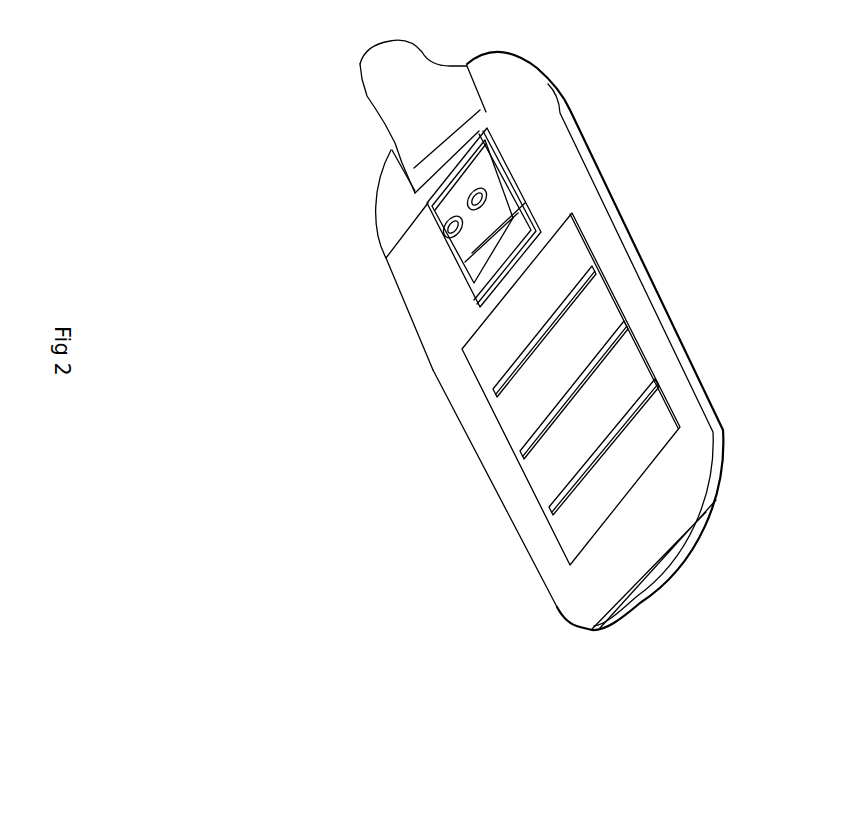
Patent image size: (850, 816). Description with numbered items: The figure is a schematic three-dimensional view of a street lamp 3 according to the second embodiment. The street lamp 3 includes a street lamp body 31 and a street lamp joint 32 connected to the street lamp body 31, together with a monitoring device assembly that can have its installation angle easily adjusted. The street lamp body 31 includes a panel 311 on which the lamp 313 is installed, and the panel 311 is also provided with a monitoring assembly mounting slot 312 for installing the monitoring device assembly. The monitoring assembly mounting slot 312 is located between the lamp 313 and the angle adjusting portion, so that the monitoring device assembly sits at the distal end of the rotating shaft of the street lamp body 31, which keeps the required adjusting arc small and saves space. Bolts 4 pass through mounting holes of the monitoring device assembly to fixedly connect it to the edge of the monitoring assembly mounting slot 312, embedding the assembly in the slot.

The street lamp 3 is at (686, 189).
The street lamp body 31 is at (587, 627).
The panel 311 is at (530, 515).
The monitoring assembly mounting slot 312 is at (472, 293).
The lamp 313 is at (530, 400).
The street lamp joint 32 is at (429, 73).
The bolts 4 is at (427, 203).